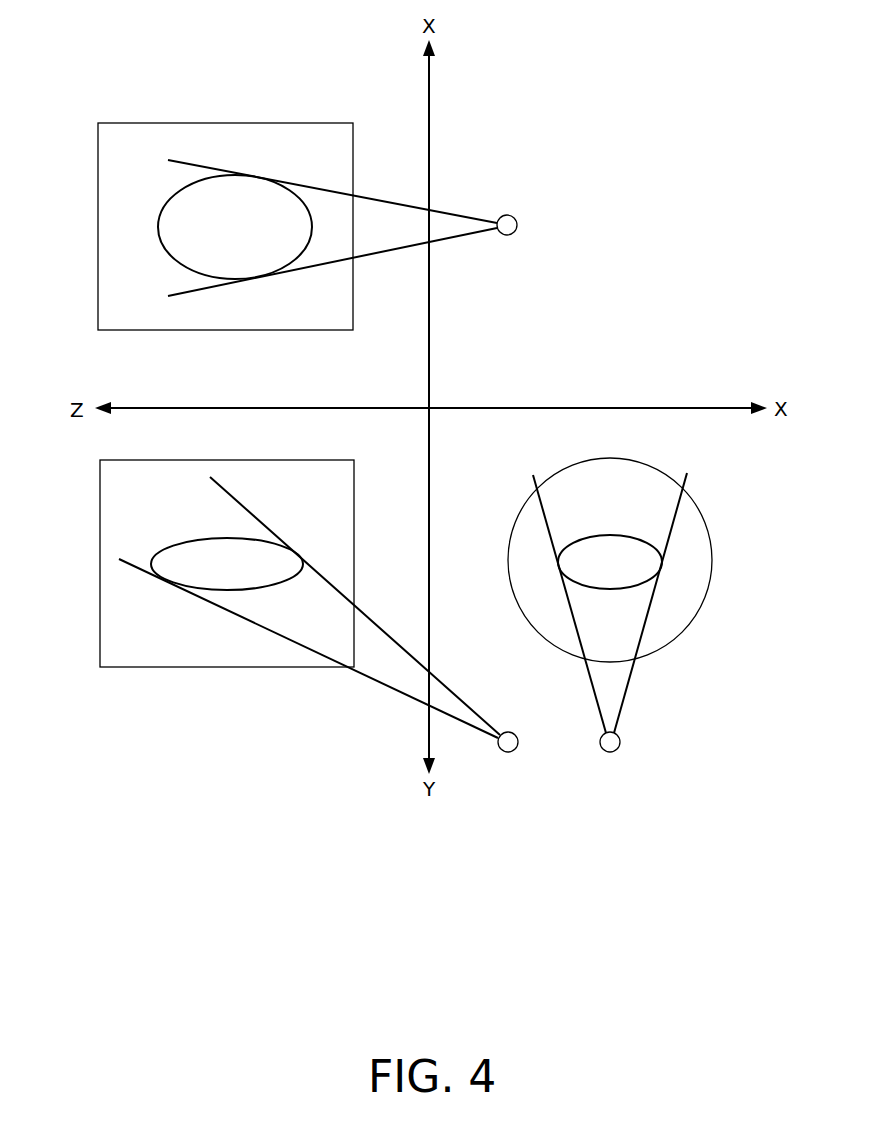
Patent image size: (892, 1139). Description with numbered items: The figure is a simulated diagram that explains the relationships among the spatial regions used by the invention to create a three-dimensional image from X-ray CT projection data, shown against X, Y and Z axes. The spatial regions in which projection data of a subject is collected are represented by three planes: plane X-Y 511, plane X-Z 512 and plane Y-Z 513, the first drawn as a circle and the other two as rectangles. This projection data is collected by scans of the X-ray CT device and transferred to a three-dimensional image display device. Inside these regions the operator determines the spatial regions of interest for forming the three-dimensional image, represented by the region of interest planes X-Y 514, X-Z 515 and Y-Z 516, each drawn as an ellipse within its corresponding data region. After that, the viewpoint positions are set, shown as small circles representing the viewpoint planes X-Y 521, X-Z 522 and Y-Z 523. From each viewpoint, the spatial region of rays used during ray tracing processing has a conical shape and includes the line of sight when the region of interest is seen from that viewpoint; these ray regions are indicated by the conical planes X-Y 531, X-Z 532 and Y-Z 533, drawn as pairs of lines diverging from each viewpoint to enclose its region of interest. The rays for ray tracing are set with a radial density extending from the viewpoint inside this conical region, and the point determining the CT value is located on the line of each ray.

The spatial region plane X-Y of projection data 511 is at (712, 562).
The spatial region plane X-Z of projection data 512 is at (223, 122).
The spatial region plane Y-Z of projection data 513 is at (225, 458).
The region of interest plane X-Y 514 is at (610, 535).
The region of interest plane X-Z 515 is at (160, 223).
The region of interest plane Y-Z 516 is at (173, 543).
The viewpoint position plane X-Y 521 is at (620, 748).
The viewpoint position plane X-Z 522 is at (515, 213).
The viewpoint position plane Y-Z 523 is at (516, 750).
The ray spatial region plane X-Y 531 is at (628, 687).
The ray spatial region plane X-Z 532 is at (447, 212).
The ray spatial region plane Y-Z 533 is at (457, 692).